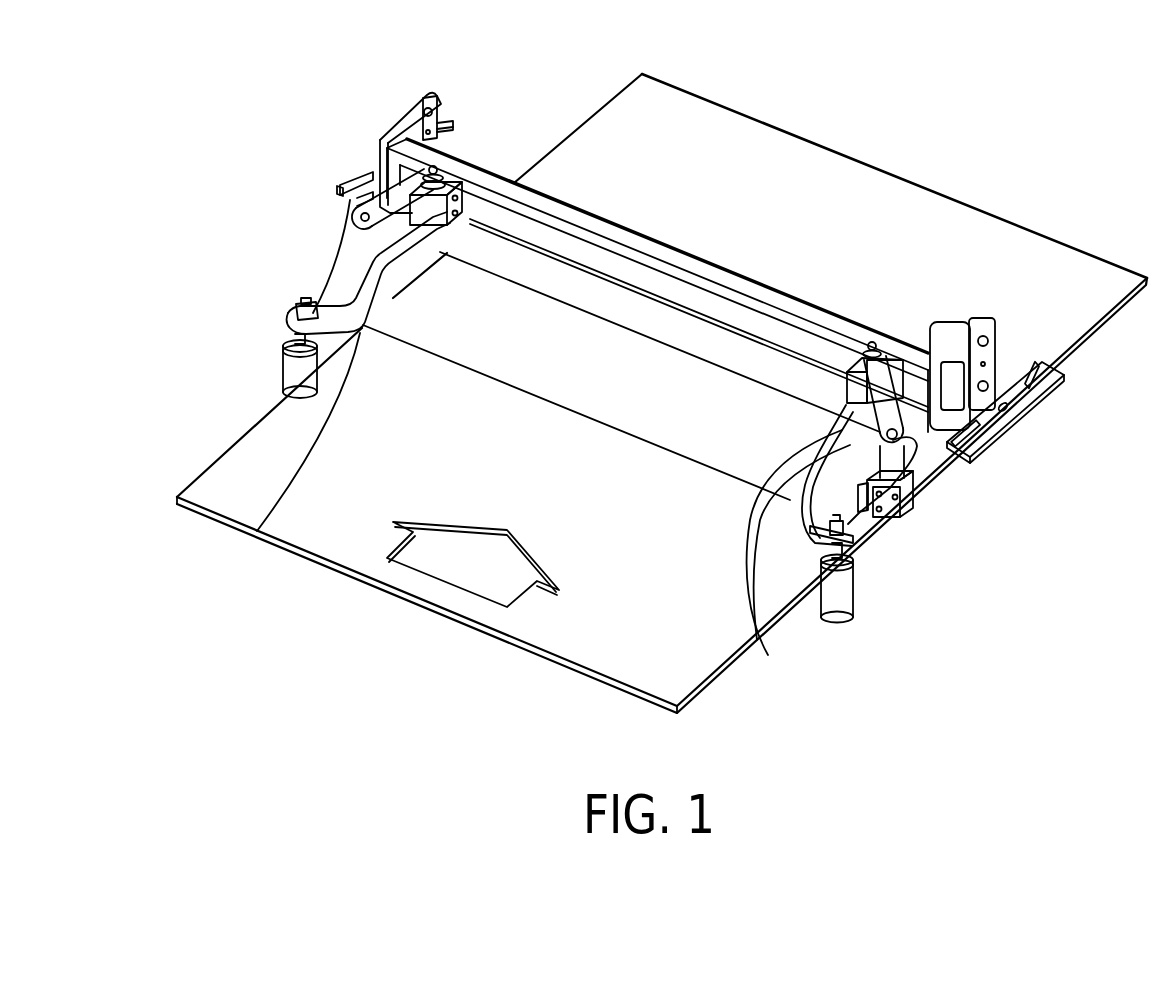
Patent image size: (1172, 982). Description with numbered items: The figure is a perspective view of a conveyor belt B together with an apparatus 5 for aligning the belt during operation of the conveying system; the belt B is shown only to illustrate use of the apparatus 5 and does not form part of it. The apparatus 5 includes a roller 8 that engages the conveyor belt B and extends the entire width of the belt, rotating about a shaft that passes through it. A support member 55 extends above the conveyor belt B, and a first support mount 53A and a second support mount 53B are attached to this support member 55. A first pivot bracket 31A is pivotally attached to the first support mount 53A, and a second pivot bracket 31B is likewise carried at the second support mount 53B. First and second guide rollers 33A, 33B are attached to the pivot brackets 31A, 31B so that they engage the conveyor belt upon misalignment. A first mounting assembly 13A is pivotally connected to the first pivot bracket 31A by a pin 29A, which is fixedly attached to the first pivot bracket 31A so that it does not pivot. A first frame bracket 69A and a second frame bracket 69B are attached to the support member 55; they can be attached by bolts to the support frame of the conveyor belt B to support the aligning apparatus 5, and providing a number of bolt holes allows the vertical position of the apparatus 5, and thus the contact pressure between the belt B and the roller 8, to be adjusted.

The apparatus for aligning a conveyor belt 5 is at (366, 118).
The roller 8 is at (445, 325).
The conveyor belt B is at (852, 157).
The support member 55 is at (570, 217).
The second frame bracket 69B is at (363, 173).
The second support mount 53B is at (433, 207).
The second pivot bracket 31B is at (360, 260).
The second guide roller 33B is at (283, 373).
The first support mount 53A is at (832, 358).
The pin 29A is at (905, 506).
The first pivot bracket 31A is at (880, 450).
The first mounting assembly 13A is at (910, 512).
The first guide roller 33A is at (848, 600).
The first frame bracket 69A is at (1047, 384).